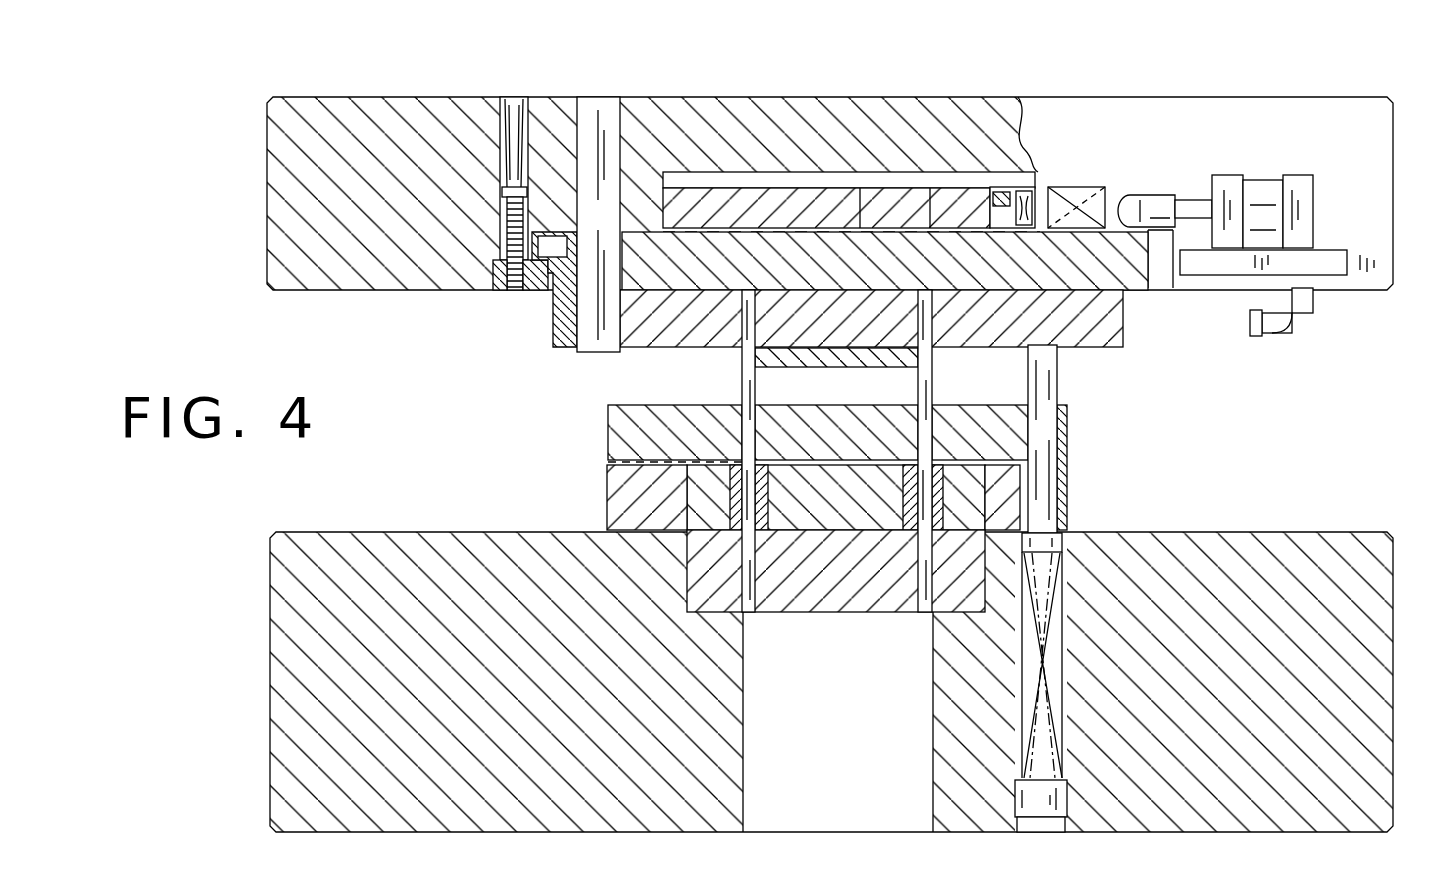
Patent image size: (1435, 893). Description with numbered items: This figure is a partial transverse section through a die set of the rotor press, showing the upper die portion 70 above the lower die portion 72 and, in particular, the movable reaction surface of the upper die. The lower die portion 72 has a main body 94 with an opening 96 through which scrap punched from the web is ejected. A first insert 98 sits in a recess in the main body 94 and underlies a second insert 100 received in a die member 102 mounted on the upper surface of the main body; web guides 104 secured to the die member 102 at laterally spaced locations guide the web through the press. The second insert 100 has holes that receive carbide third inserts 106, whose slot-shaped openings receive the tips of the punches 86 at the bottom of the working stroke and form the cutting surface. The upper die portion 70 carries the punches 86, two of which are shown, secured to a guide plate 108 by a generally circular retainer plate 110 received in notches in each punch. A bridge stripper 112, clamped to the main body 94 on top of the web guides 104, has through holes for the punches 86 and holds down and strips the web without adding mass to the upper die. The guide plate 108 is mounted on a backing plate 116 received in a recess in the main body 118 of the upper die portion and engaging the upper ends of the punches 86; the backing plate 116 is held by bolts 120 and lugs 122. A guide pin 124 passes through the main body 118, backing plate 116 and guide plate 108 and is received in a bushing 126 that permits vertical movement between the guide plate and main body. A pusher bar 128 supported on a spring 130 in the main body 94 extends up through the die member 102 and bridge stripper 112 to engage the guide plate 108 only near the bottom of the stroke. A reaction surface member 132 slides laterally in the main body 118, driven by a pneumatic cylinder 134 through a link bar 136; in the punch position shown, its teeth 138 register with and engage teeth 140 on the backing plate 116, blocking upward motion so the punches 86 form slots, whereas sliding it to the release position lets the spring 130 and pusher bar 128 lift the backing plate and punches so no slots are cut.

The upper die portion 70 is at (250, 229).
The lower die portion 72 is at (232, 660).
The punches 86 is at (742, 395).
The main body 94 is at (320, 532).
The opening 96 is at (797, 805).
The first insert 98 is at (877, 612).
The second insert 100 is at (822, 520).
The die member 102 is at (620, 492).
The web guides 104 is at (608, 425).
The third inserts 106 is at (763, 507).
The guide plate 108 is at (665, 332).
The retainer plate 110 is at (853, 357).
The bridge stripper 112 is at (812, 420).
The backing plate 116 is at (1128, 265).
The main body 118 is at (405, 97).
The bolts 120 is at (514, 97).
The lugs 122 is at (500, 285).
The guide pin 124 is at (598, 150).
The bushing 126 is at (535, 285).
The pusher bar 128 is at (1045, 392).
The spring 130 is at (1047, 637).
The reaction surface member 132 is at (998, 190).
The pneumatic cylinder 134 is at (1268, 182).
The link bar 136 is at (1150, 200).
The teeth 138 is at (750, 225).
The teeth 140 is at (925, 225).